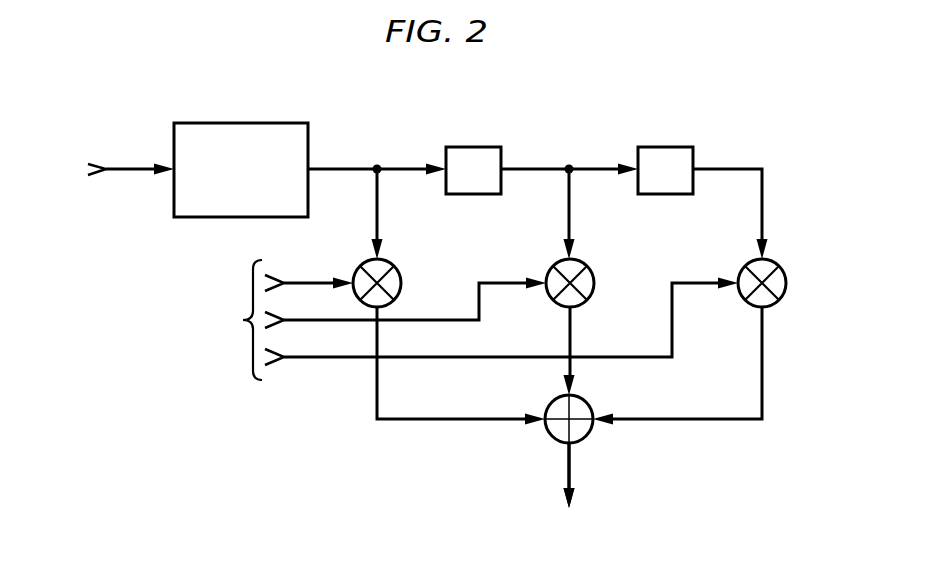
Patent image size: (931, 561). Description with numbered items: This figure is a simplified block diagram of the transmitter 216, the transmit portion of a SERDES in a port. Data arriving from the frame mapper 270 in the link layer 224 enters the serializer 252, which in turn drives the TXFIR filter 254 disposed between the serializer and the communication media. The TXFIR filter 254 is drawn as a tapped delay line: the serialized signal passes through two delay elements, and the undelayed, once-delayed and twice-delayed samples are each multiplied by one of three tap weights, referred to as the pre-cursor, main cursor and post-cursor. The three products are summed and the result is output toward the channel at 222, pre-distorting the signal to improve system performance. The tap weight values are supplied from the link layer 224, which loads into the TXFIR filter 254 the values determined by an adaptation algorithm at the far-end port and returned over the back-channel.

The transmitter 216 is at (631, 100).
The serializer 252 is at (197, 123).
The TXFIR filter 254 is at (743, 120).
The frame mapper 270 is at (108, 170).
The link layer 224 is at (452, 319).
The output destination 222 is at (570, 495).